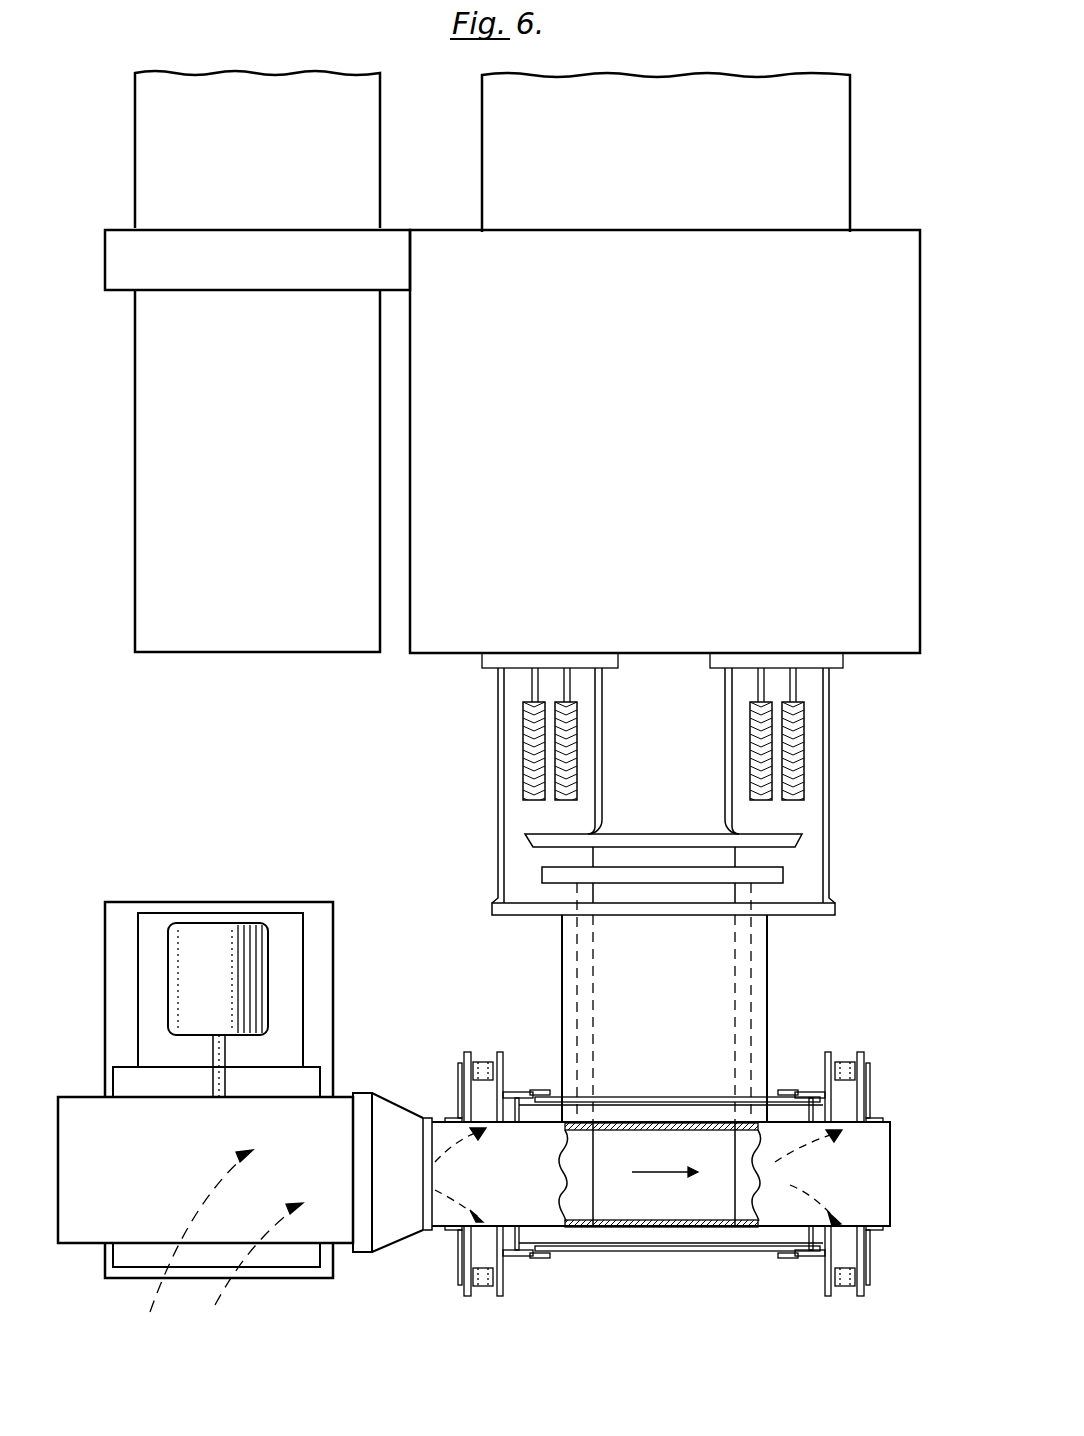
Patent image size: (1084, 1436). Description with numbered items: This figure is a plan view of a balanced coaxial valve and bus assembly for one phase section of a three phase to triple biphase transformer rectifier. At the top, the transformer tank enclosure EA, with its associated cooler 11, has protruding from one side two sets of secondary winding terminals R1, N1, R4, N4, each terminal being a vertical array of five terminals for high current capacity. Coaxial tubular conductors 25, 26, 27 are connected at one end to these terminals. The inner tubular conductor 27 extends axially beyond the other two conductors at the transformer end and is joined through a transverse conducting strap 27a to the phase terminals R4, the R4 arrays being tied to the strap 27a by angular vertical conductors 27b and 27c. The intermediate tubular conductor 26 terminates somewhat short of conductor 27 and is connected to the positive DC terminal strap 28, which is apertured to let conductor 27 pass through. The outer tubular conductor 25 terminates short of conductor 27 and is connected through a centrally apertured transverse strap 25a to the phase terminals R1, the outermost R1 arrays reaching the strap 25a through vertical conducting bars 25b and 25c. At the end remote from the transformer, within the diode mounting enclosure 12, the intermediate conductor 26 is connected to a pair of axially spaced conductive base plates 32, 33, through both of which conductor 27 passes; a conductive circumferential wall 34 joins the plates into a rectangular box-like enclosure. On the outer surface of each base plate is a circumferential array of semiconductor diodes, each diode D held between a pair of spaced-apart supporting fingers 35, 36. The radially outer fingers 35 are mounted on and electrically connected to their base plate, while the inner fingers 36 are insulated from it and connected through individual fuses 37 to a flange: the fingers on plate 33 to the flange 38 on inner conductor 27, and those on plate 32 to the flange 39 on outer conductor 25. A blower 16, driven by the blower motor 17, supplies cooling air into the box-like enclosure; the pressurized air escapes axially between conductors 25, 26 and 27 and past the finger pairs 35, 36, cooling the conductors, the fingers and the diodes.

The cooler 11 is at (153, 449).
The diode mounting enclosure 12 is at (893, 1212).
The blower 16 is at (90, 1228).
The blower motor 17 is at (216, 933).
The outer tubular conductor 25 is at (762, 977).
The transverse strap 25a is at (533, 908).
The vertical conducting bar 25b is at (498, 812).
The vertical conducting bar 25c is at (829, 815).
The intermediate tubular conductor 26 is at (692, 893).
The inner tubular conductor 27 is at (628, 856).
The transverse conducting strap 27a is at (686, 845).
The angular vertical conductor 27b is at (602, 773).
The angular vertical conductor 27c is at (725, 773).
The positive DC terminal strap 28 is at (633, 878).
The conductive base plate 32 is at (640, 1133).
The conductive base plate 33 is at (661, 1220).
The conductive circumferential wall 34 is at (892, 1158).
The radially outer diode supporting finger 35 is at (462, 1057).
The radially inner diode supporting finger 36 is at (503, 1055).
The fuse 37 is at (537, 1090).
The conductive flange 38 is at (635, 1260).
The conductive flange 39 is at (623, 1097).
The diode D is at (485, 1062).
The secondary winding terminal N1 is at (528, 687).
The secondary winding terminal N4 is at (567, 688).
The phase terminal R1 is at (498, 730).
The phase terminal R4 is at (725, 731).
The transformer tank enclosure EA is at (665, 363).